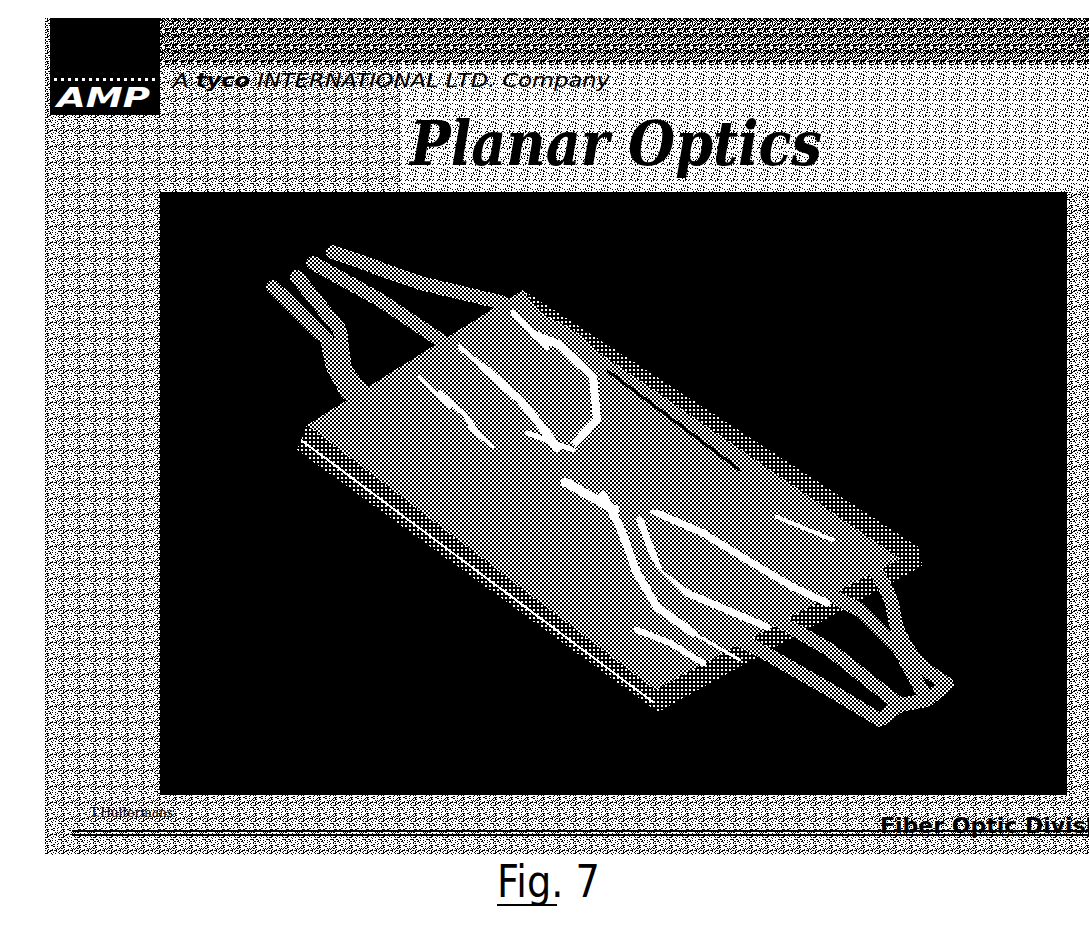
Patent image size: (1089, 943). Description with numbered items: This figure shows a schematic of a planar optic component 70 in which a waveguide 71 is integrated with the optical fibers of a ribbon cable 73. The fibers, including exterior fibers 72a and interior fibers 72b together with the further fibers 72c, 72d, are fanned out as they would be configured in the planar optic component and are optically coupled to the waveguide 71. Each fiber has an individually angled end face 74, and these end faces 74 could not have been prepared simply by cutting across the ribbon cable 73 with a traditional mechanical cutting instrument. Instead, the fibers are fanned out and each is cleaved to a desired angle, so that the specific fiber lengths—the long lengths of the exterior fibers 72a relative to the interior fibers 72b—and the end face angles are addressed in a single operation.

The planar optic component 70 is at (548, 550).
The waveguide 71 is at (630, 494).
The exterior fibers 72a is at (820, 546).
The interior fibers 72b is at (728, 608).
The optical fiber 72c is at (785, 578).
The optical fiber 72d is at (670, 634).
The ribbon cable 73 is at (890, 712).
The end faces 74 is at (672, 654).